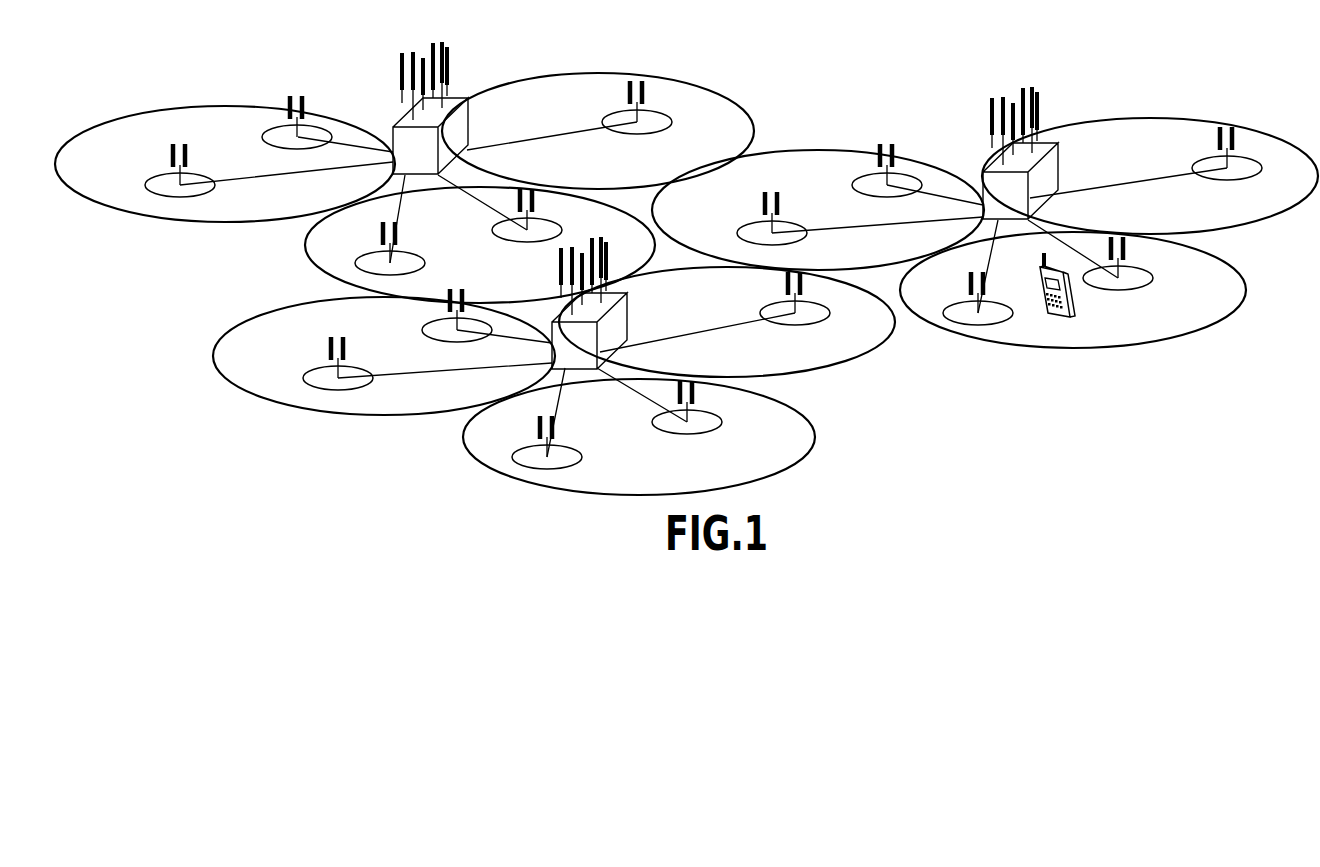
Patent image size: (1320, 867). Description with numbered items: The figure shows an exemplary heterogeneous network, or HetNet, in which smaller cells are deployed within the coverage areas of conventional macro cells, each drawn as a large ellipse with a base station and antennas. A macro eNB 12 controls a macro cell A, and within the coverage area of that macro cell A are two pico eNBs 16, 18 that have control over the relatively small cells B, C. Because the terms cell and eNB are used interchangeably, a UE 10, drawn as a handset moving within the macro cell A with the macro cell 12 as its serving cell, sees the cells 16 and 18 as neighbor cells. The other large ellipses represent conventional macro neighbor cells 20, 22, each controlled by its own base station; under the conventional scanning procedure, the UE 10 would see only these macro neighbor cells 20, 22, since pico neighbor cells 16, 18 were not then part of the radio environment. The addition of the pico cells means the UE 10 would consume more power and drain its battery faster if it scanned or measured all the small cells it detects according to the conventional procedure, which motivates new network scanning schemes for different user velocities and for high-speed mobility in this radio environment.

The UE 10 is at (1046, 316).
The macro eNB 12 is at (1033, 145).
The pico eNB 16 is at (975, 296).
The pico eNB 18 is at (1120, 280).
The macro neighbor cell 20 is at (620, 307).
The macro neighbor cell 22 is at (463, 116).
The macro cell A is at (1117, 338).
The pico cell B is at (990, 320).
The pico cell C is at (1140, 283).